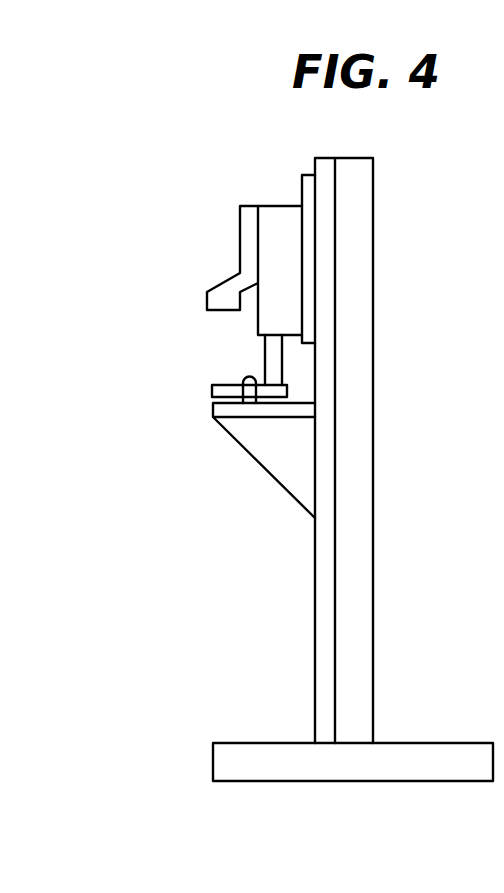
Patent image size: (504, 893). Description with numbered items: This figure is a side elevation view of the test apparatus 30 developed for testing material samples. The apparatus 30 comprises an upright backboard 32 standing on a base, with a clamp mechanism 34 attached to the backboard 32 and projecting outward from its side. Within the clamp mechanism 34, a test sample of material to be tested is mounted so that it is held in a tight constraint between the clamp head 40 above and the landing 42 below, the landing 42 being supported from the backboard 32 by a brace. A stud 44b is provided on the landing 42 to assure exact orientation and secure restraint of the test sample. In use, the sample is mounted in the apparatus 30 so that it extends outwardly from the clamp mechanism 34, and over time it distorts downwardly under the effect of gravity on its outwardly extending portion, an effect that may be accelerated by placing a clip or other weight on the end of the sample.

The test apparatus 30 is at (400, 342).
The upright backboard 32 is at (322, 553).
The clamp mechanism 34 is at (272, 248).
The clamp head 40 is at (212, 390).
The landing 42 is at (213, 412).
The stud 44b is at (243, 378).